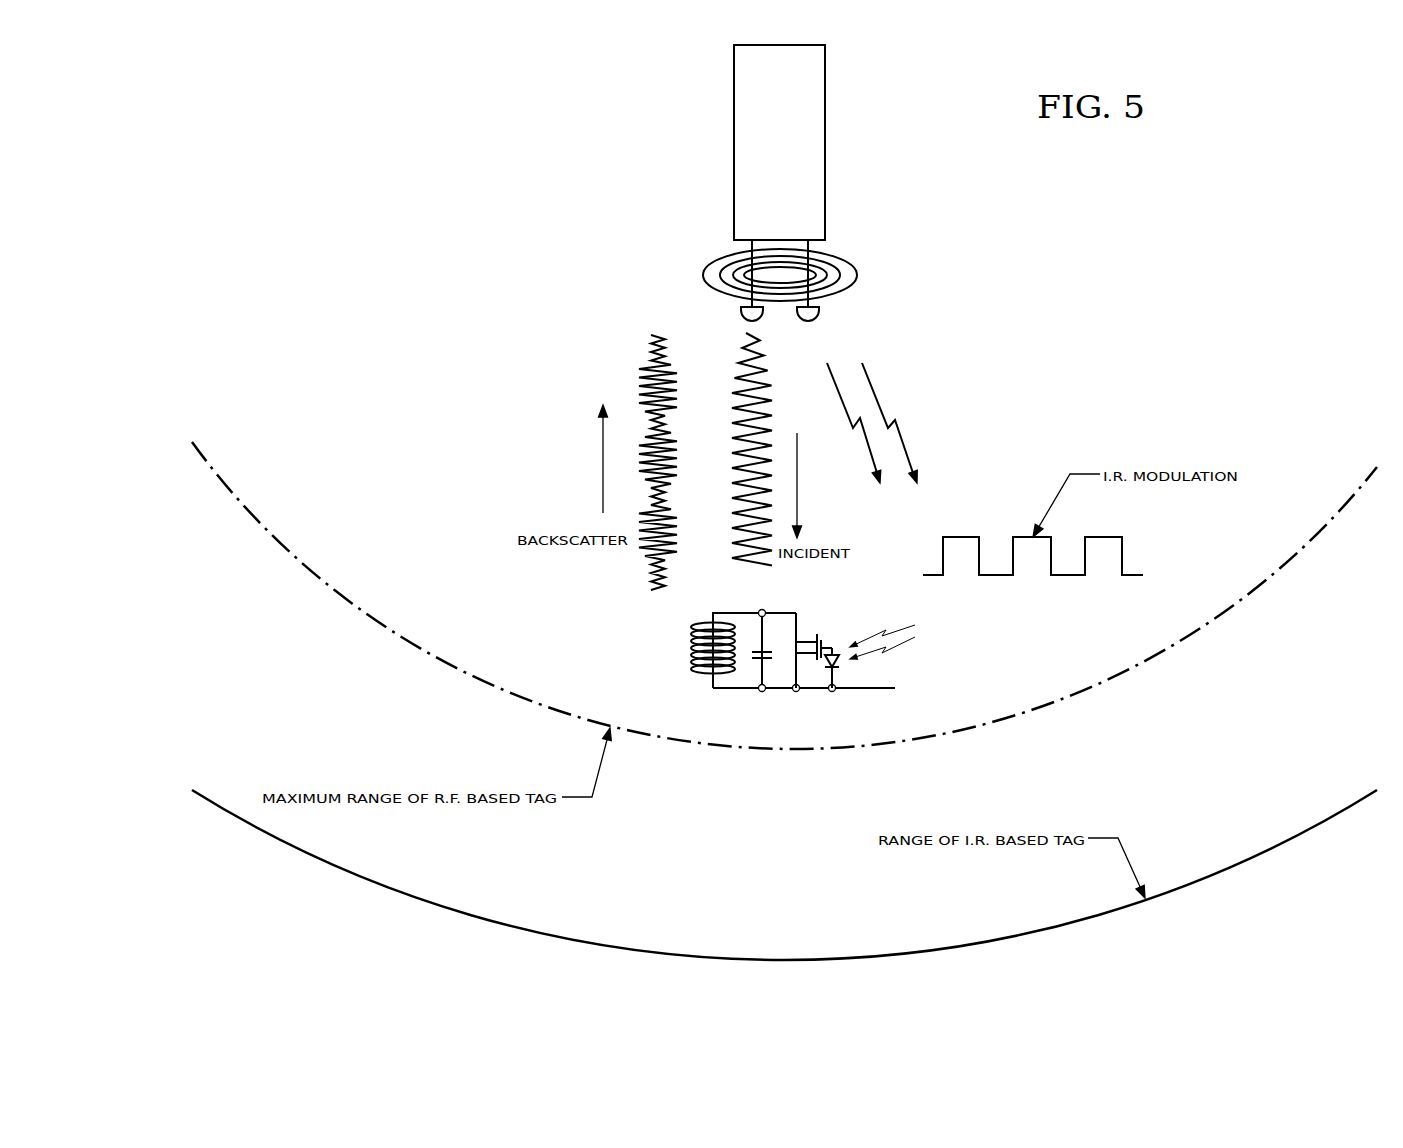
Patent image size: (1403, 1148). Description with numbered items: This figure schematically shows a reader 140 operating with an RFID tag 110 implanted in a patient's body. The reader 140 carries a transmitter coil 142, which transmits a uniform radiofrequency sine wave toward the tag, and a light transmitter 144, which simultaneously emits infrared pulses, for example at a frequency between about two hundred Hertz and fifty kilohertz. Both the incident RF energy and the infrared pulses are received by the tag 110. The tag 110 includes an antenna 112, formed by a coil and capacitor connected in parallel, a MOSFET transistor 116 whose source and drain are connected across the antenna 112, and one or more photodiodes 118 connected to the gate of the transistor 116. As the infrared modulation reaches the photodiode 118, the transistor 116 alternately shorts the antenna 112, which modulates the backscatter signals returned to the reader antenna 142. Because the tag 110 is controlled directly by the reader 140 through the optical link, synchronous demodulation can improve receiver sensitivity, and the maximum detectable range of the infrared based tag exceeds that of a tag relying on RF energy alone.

The RFID tag 110 is at (955, 649).
The antenna 112 is at (697, 670).
The MOSFET transistor 116 is at (807, 635).
The photodiode 118 is at (830, 648).
The reader 140 is at (695, 142).
The transmitter coil 142 is at (855, 265).
The light transmitter 144 is at (865, 331).